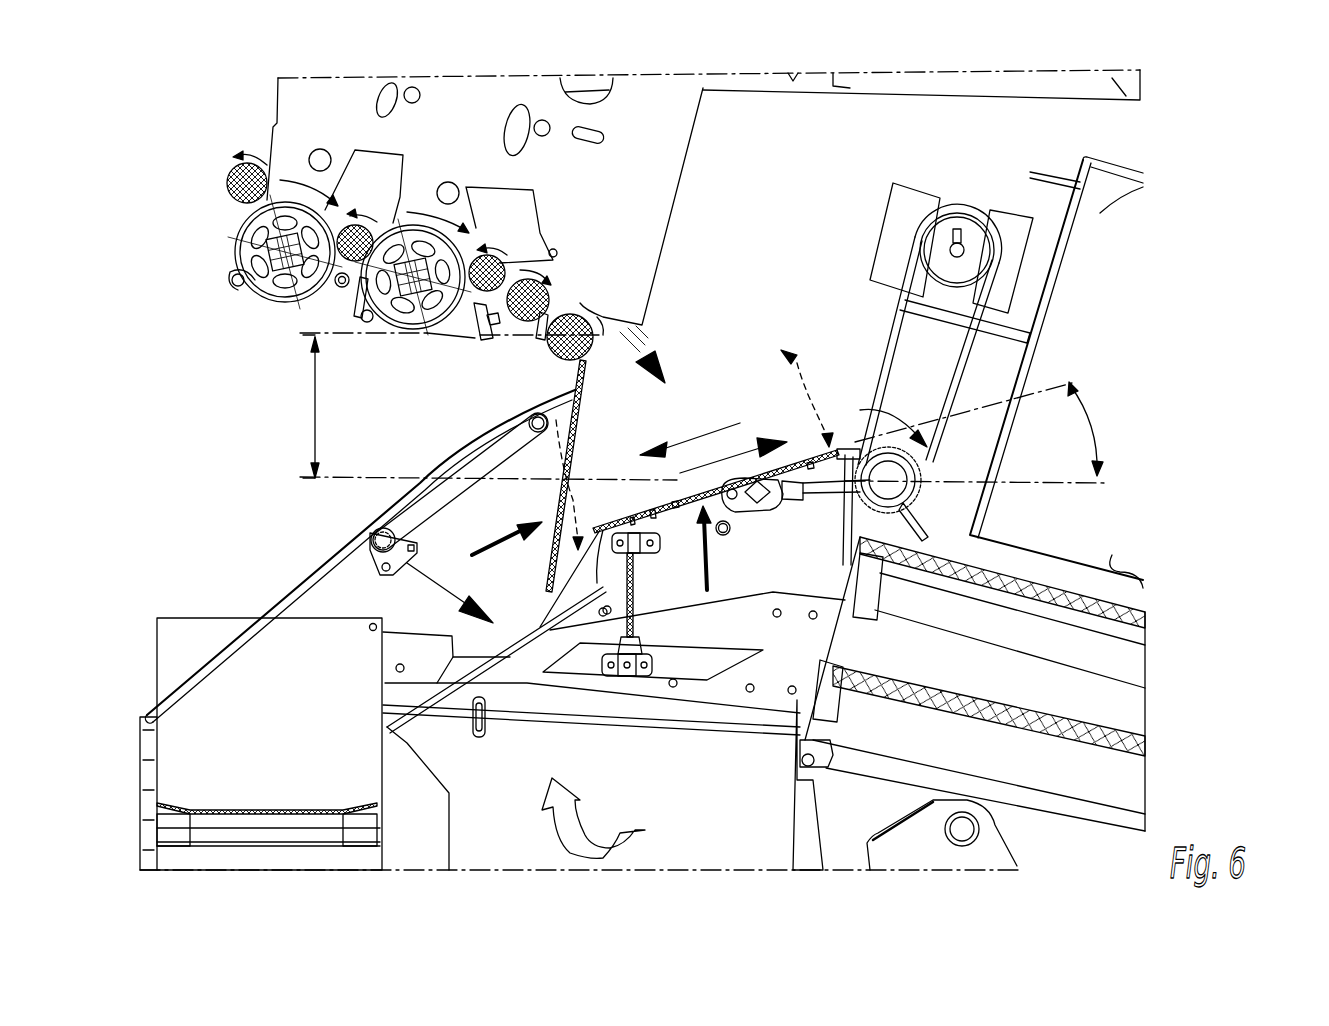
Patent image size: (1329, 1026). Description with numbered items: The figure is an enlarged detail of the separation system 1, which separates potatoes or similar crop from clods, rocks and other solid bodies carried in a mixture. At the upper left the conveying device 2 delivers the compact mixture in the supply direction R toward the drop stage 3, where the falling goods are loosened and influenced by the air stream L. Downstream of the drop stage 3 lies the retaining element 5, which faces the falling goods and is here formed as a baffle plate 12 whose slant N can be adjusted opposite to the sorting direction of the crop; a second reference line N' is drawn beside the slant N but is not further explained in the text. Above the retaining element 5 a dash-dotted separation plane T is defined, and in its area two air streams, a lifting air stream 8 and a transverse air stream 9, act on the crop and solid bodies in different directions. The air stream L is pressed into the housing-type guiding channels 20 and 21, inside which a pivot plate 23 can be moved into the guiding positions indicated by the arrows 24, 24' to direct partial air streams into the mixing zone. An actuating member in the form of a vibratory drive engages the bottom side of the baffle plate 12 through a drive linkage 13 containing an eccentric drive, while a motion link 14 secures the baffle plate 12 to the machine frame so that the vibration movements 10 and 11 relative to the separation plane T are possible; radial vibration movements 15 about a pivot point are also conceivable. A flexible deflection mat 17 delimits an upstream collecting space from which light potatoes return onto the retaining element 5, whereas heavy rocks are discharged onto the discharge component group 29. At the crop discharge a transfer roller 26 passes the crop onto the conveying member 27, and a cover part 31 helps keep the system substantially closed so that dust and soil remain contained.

The separation system 1 is at (1228, 70).
The conveying device 2 is at (247, 108).
The drop stage 3 is at (315, 400).
The retaining element 5 is at (624, 496).
The lifting air stream 8 is at (717, 562).
The transverse air stream 9 is at (500, 545).
The vibration movement 10 is at (705, 431).
The vibration movement 11 is at (727, 465).
The baffle plate 12 is at (700, 520).
The drive linkage 13 is at (790, 512).
The motion link 14 is at (640, 606).
The radial vibration movements 15 is at (812, 330).
The deflection mat 17 is at (543, 590).
The guiding channel 20 is at (510, 850).
The guiding channel 21 is at (368, 607).
The pivot plate 23 is at (407, 522).
The guiding position 24 is at (431, 576).
The guiding position 24' is at (478, 484).
The transfer roller 26 is at (923, 460).
The conveying member 27 is at (1136, 665).
The discharge component group 29 is at (334, 754).
The cover part 31 is at (258, 617).
The supply direction R is at (637, 340).
The separation plane T is at (807, 450).
The slant N is at (1108, 429).
The reference line N' is at (1138, 503).
The air stream L is at (633, 840).